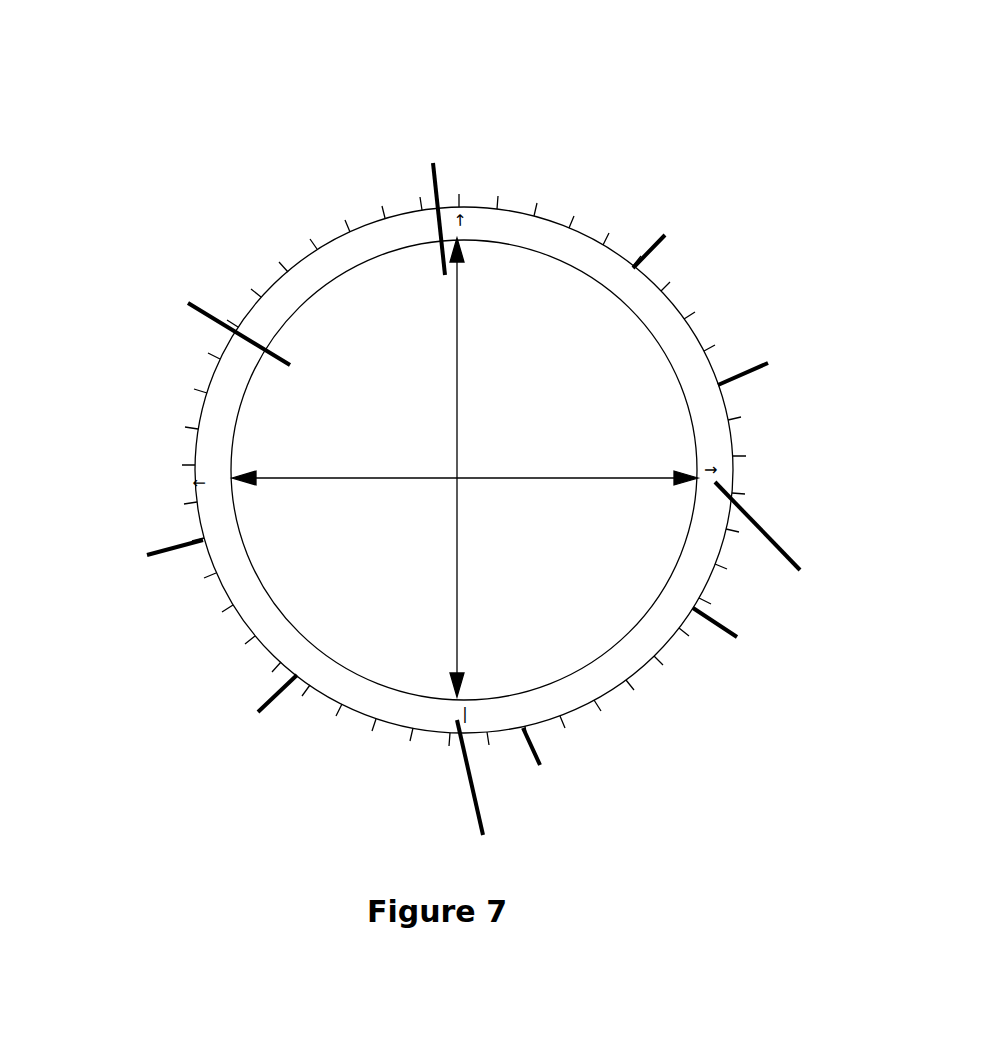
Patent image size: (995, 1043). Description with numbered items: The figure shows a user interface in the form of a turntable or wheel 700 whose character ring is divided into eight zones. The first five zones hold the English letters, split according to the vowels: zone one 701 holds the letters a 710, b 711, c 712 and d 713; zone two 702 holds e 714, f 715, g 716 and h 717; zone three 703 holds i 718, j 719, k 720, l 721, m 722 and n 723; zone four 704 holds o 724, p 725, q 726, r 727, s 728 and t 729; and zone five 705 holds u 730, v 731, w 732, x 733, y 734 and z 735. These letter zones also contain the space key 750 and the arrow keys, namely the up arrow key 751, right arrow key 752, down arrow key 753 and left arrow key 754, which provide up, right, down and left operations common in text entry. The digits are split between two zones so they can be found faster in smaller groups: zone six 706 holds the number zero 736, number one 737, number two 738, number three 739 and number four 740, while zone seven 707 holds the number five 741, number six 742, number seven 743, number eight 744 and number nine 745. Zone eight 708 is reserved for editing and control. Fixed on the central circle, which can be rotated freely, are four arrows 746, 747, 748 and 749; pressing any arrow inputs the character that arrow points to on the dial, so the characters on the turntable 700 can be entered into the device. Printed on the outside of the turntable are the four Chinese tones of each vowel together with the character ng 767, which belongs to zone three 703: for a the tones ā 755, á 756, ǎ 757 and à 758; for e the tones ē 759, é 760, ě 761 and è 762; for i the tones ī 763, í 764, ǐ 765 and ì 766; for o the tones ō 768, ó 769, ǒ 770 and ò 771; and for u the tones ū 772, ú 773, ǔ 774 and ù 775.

The turntable 700 is at (470, 105).
The zone 1 701 is at (612, 150).
The zone 2 702 is at (785, 300).
The zone 3 703 is at (830, 487).
The zone 4 704 is at (695, 748).
The zone 5 705 is at (395, 802).
The zone 6 706 is at (177, 643).
The zone 7 707 is at (123, 413).
The zone 8 708 is at (277, 197).
The letter a 710 is at (515, 237).
The letter b 711 is at (547, 242).
The letter c 712 is at (573, 257).
The letter d 713 is at (612, 278).
The letter e 714 is at (633, 310).
The letter f 715 is at (652, 320).
The letter g 716 is at (668, 350).
The letter h 717 is at (693, 377).
The letter i 718 is at (700, 402).
The letter j 719 is at (698, 430).
The letter k 720 is at (703, 460).
The letter l 721 is at (698, 510).
The letter m 722 is at (710, 500).
The letter n 723 is at (705, 530).
The letter o 724 is at (665, 612).
The letter p 725 is at (645, 630).
The letter q 726 is at (620, 650).
The letter r 727 is at (590, 675).
The letter s 728 is at (560, 687).
The letter t 729 is at (530, 688).
The letter u 730 is at (505, 697).
The letter v 731 is at (477, 700).
The letter w 732 is at (423, 698).
The letter x 733 is at (388, 690).
The letter y 734 is at (358, 677).
The letter z 735 is at (328, 672).
The number 0 736 is at (305, 640).
The number 1 737 is at (287, 615).
The number 2 738 is at (262, 592).
The number 3 739 is at (247, 570).
The number 4 740 is at (238, 542).
The number 5 741 is at (232, 512).
The number 6 742 is at (232, 448).
The number 7 743 is at (222, 421).
The number 8 744 is at (243, 390).
The number 9 745 is at (252, 358).
The arrow 746 is at (458, 337).
The arrow 747 is at (577, 482).
The arrow 748 is at (457, 587).
The arrow 749 is at (332, 478).
The space key 750 is at (483, 233).
The up arrow key 751 is at (452, 205).
The right arrow key 752 is at (773, 541).
The down arrow key 753 is at (480, 789).
The left arrow key 754 is at (202, 485).
The tone character ā 755 is at (519, 180).
The tone character á 756 is at (557, 203).
The tone character ǎ 757 is at (612, 210).
The tone character à 758 is at (637, 238).
The tone character ē 759 is at (678, 263).
The tone character é 760 is at (698, 293).
The tone character ě 761 is at (732, 333).
The tone character è 762 is at (743, 363).
The tone character ī 763 is at (765, 393).
The tone character í 764 is at (763, 415).
The tone character ǐ 765 is at (770, 450).
The tone character ì 766 is at (750, 520).
The language character ng 767 is at (750, 573).
The tone character ō 768 is at (707, 637).
The tone character ó 769 is at (678, 668).
The tone character ǒ 770 is at (655, 695).
The tone character ò 771 is at (610, 725).
The tone character ū 772 is at (520, 762).
The tone character ú 773 is at (492, 767).
The tone character ǔ 774 is at (417, 750).
The tone character ù 775 is at (367, 740).